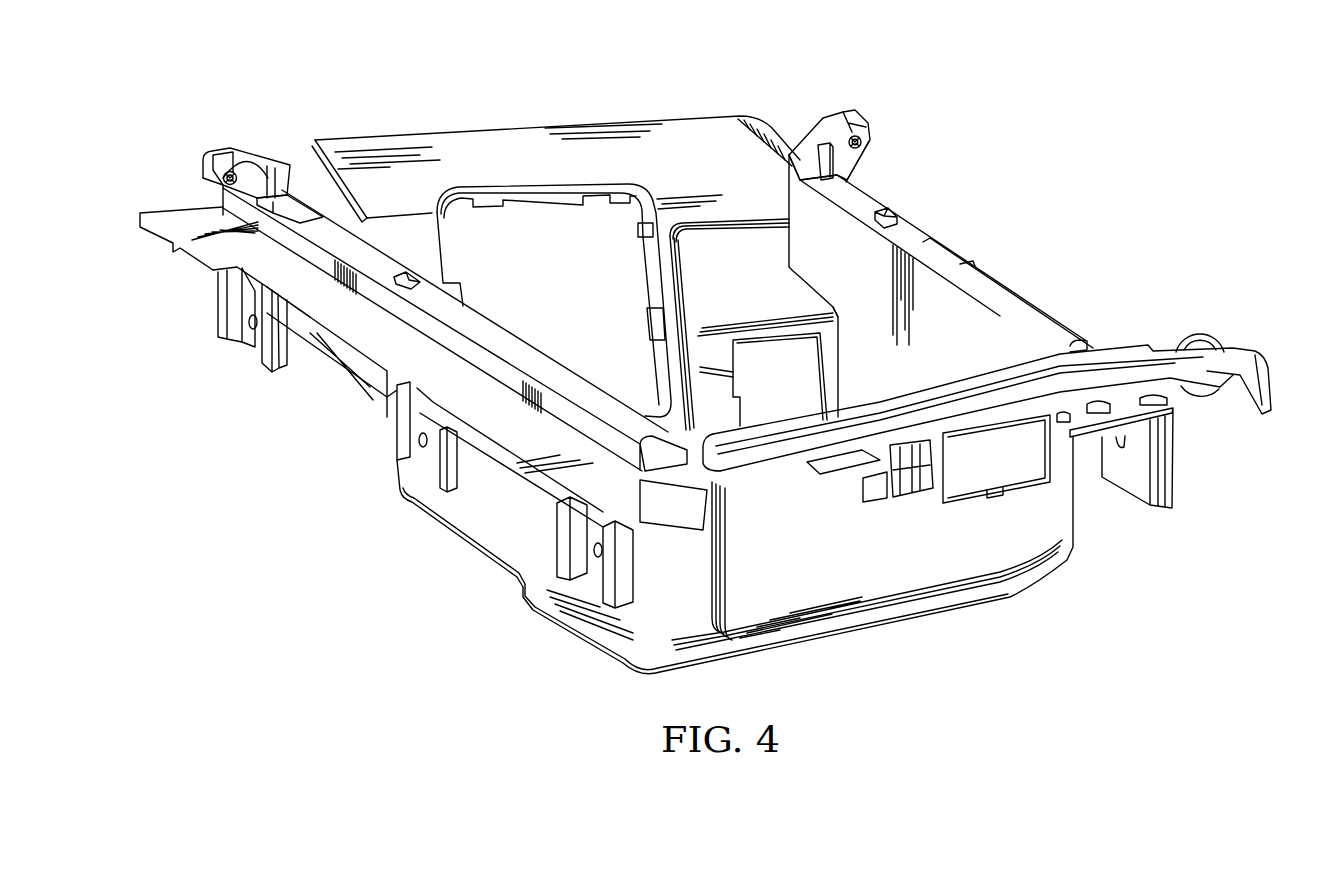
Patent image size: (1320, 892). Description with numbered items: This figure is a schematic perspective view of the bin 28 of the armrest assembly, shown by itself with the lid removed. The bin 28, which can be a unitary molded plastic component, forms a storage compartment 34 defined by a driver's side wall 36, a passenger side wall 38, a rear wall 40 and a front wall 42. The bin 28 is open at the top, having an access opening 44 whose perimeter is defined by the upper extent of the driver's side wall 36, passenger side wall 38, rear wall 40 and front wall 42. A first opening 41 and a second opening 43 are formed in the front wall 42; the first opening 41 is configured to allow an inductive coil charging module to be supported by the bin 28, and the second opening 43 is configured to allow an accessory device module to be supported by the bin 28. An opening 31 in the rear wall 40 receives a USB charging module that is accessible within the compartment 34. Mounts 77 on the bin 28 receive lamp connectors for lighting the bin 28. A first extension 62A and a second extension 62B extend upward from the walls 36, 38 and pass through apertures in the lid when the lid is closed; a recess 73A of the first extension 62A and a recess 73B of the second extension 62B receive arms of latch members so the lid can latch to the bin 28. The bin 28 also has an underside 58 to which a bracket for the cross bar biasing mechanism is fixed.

The bin 28 is at (300, 407).
The opening 31 is at (1010, 460).
The storage compartment 34 is at (749, 261).
The driver's side wall 36 is at (418, 395).
The passenger side wall 38 is at (971, 316).
The rear wall 40 is at (762, 497).
The first opening 41 is at (511, 235).
The front wall 42 is at (578, 152).
The second opening 43 is at (765, 360).
The access opening 44 is at (879, 261).
The underside 58 is at (1193, 378).
The first extension 62A is at (845, 111).
The second extension 62B is at (221, 150).
The recess 73A is at (871, 146).
The recess 73B is at (256, 174).
The mounts 77 is at (833, 484).